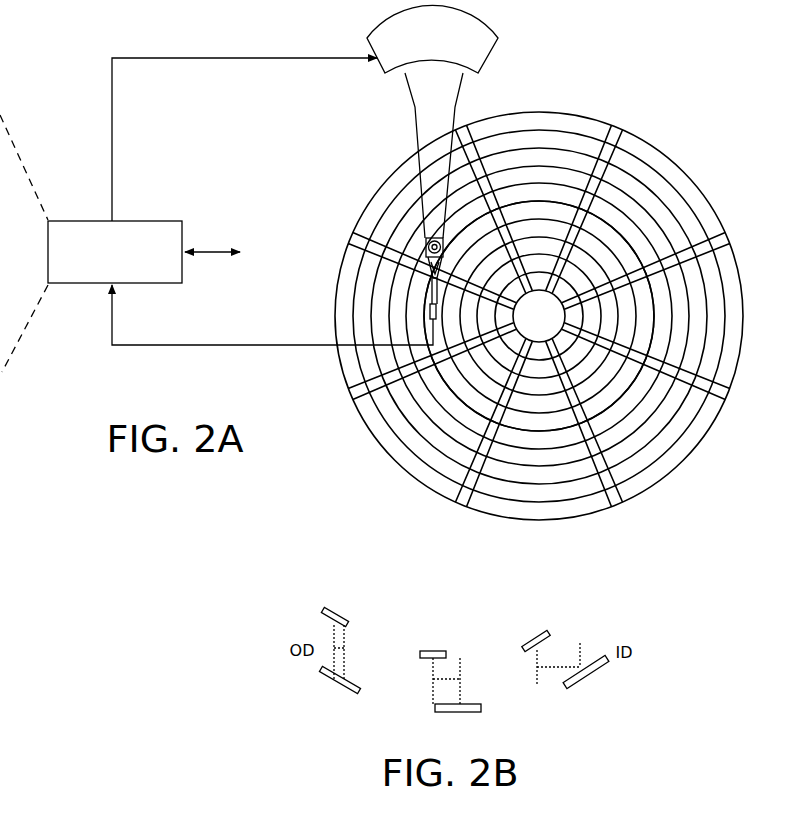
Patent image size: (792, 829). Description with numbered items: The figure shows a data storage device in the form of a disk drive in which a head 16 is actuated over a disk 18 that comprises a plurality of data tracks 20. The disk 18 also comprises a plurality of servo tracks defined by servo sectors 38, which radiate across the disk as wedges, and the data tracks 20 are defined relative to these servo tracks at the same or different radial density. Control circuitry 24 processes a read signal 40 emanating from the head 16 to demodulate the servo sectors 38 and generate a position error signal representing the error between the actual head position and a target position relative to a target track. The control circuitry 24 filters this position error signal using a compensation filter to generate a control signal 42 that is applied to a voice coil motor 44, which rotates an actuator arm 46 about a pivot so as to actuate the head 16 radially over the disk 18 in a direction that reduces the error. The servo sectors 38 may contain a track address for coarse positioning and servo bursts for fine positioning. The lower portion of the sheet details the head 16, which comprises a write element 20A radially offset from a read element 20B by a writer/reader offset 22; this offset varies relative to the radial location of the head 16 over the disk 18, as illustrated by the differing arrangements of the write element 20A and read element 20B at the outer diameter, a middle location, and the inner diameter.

In FIG. 2A, the head 16 is at (428, 315).
In FIG. 2B, the head 16 is at (312, 622).
In FIG. 2A, the disk 18 is at (680, 156).
In FIG. 2A, the data tracks 20 is at (546, 135).
In FIG. 2B, the writer/reader offset 22 is at (460, 680).
In FIG. 2A, the control circuitry 24 is at (150, 220).
In FIG. 2A, the servo sectors 38 is at (484, 140).
In FIG. 2A, the read signal 40 is at (240, 345).
In FIG. 2A, the control signal 42 is at (112, 126).
In FIG. 2A, the voice coil motor 44 is at (386, 72).
In FIG. 2A, the actuator arm 46 is at (418, 140).
In FIG. 2B, the write element 20A is at (330, 684).
In FIG. 2B, the read element 20B is at (338, 611).